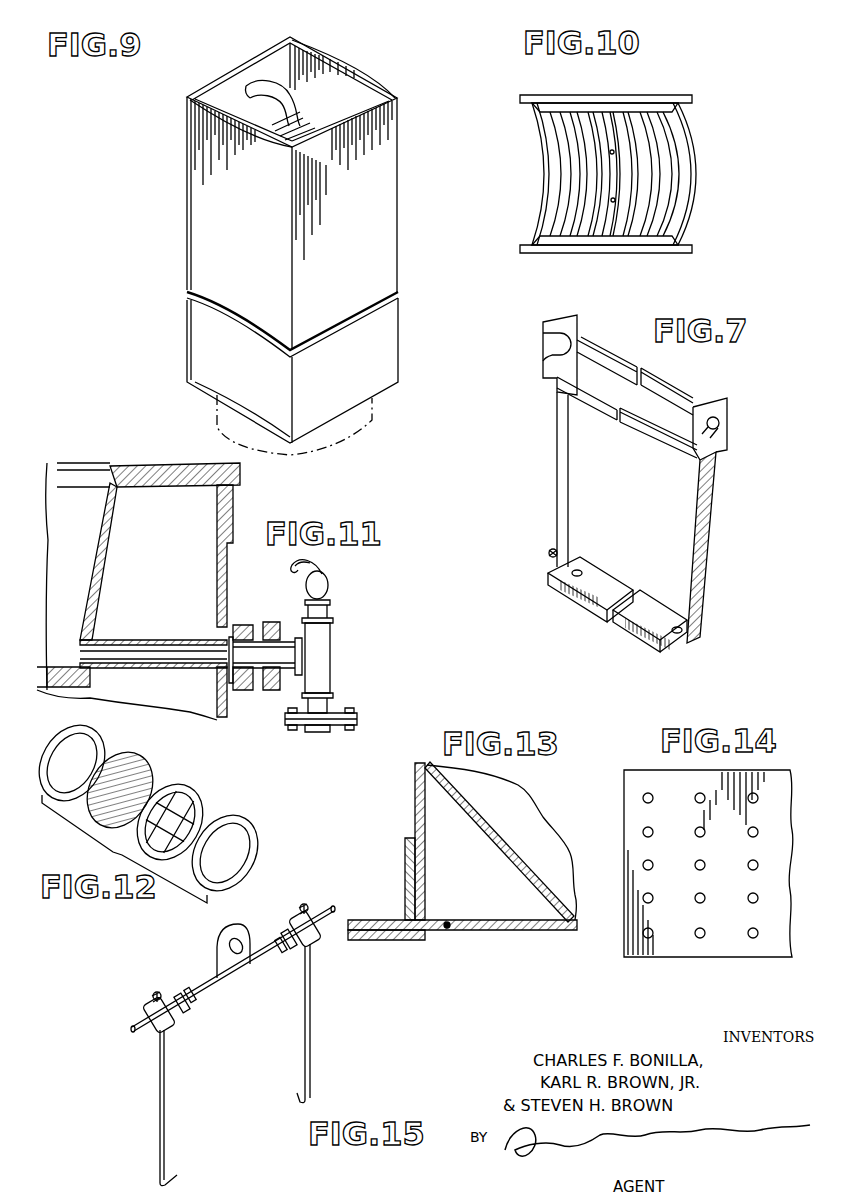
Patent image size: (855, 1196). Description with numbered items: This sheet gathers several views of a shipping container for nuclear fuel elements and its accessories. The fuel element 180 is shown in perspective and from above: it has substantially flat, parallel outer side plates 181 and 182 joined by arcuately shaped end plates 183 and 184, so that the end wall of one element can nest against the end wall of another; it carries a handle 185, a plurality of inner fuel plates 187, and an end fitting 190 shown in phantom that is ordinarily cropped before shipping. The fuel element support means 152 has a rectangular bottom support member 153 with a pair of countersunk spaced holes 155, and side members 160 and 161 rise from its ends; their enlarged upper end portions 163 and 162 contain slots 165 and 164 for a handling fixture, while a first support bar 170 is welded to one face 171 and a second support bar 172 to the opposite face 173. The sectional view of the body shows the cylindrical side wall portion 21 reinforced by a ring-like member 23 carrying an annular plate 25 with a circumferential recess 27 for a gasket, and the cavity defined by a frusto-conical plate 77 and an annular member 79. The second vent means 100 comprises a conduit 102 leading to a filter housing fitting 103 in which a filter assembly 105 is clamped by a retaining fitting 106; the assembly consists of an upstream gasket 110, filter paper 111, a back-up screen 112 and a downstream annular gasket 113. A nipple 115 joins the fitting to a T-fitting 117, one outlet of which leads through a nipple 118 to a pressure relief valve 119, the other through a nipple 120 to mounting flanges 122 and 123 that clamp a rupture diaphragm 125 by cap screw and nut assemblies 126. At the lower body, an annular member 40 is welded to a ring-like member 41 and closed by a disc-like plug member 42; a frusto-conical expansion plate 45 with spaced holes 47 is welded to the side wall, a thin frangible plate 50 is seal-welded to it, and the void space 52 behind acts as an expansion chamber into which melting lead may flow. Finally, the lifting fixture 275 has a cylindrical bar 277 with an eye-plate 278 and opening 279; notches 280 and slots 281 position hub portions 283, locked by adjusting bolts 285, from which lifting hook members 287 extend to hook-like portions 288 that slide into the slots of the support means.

In FIG. 11, the side wall portion 21 is at (225, 572).
In FIG. 13, the side wall portion 21 is at (413, 803).
In FIG. 11, the cylindrical ring-like member 23 is at (233, 508).
In FIG. 11, the annular plate 25 is at (170, 489).
In FIG. 11, the circumferentially extending recess 27 is at (192, 463).
In FIG. 13, the annular member 40 is at (372, 920).
In FIG. 13, the ring-like member 41 is at (403, 861).
In FIG. 13, the disc-like plug member 42 is at (500, 930).
In FIG. 13, the expansion plate 45 is at (566, 896).
In FIG. 14, the expansion plate 45 is at (708, 883).
In FIG. 13, the spaced holes 47 is at (448, 809).
In FIG. 14, the spaced holes 47 is at (652, 861).
In FIG. 13, the frangible plate 50 is at (485, 849).
In FIG. 13, the void space 52 is at (470, 931).
In FIG. 11, the frusto-conically shaped plate 77 is at (110, 547).
In FIG. 11, the annular member 79 is at (88, 678).
In FIG. 11, the second vent means 100 is at (355, 667).
In FIG. 11, the conduit 102 is at (130, 637).
In FIG. 11, the filter housing fitting 103 is at (233, 705).
In FIG. 11, the filter assembly 105 is at (218, 656).
In FIG. 11, the filter and gasket retaining fitting 106 is at (280, 612).
In FIG. 12, the upstream gasket 110 is at (98, 735).
In FIG. 12, the filter paper 111 is at (143, 764).
In FIG. 12, the back-up screen 112 is at (198, 794).
In FIG. 12, the downstream annular gasket 113 is at (253, 827).
In FIG. 11, the nipple 115 is at (302, 682).
In FIG. 11, the T-fitting 117 is at (325, 655).
In FIG. 11, the nipple 118 is at (330, 618).
In FIG. 11, the pressure relief valve 119 is at (320, 576).
In FIG. 11, the nipple 120 is at (333, 698).
In FIG. 11, the mounting flange 122 is at (357, 716).
In FIG. 11, the mounting flange 123 is at (357, 725).
In FIG. 11, the rupture diaphragm 125 is at (340, 732).
In FIG. 11, the cap screw and nut assemblies 126 is at (298, 730).
In FIG. 7, the fuel element support means 152 is at (645, 486).
In FIG. 7, the bottom support member 153 is at (618, 621).
In FIG. 7, the spaced holes 155 is at (573, 578).
In FIG. 7, the side member 160 is at (533, 432).
In FIG. 7, the side member 161 is at (703, 548).
In FIG. 7, the upper end portion 162 is at (744, 431).
In FIG. 7, the upper end portion 163 is at (533, 346).
In FIG. 7, the slot 164 is at (720, 447).
In FIG. 7, the slot 165 is at (549, 340).
In FIG. 7, the first support member or bar 170 is at (627, 428).
In FIG. 7, the face 171 is at (692, 425).
In FIG. 7, the second support member or bar 172 is at (668, 390).
In FIG. 7, the opposite face 173 is at (580, 322).
In FIG. 9, the fuel element 180 is at (274, 234).
In FIG. 10, the fuel element 180 is at (638, 171).
In FIG. 9, the outer side plate 181 is at (222, 72).
In FIG. 10, the outer side plate 181 is at (585, 95).
In FIG. 9, the outer side plate 182 is at (383, 183).
In FIG. 10, the outer side plate 182 is at (655, 253).
In FIG. 9, the arcuately shaped end plate 183 is at (352, 62).
In FIG. 10, the arcuately shaped end plate 183 is at (700, 127).
In FIG. 9, the arcuately shaped end plate 184 is at (244, 120).
In FIG. 10, the arcuately shaped end plate 184 is at (542, 144).
In FIG. 9, the handle 185 is at (285, 88).
In FIG. 10, the handle 185 is at (616, 236).
In FIG. 9, the inner fuel plates 187 is at (300, 122).
In FIG. 10, the inner fuel plates 187 is at (645, 198).
In FIG. 9, the end fitting 190 is at (372, 423).
In FIG. 7, the end fitting 190 is at (547, 542).
In FIG. 15, the lifting fixture 275 is at (232, 1026).
In FIG. 15, the cylindrical bar 277 is at (268, 964).
In FIG. 15, the eye-plate 278 is at (211, 945).
In FIG. 15, the opening 279 is at (230, 941).
In FIG. 15, the first pair of notches 280 is at (190, 987).
In FIG. 15, the second pair of slots 281 is at (182, 1012).
In FIG. 15, the hub portions 283 is at (148, 1011).
In FIG. 15, the adjusting bolts 285 is at (155, 992).
In FIG. 15, the lifting hook member 287 is at (158, 1097).
In FIG. 15, the hook-like portion 288 is at (174, 1165).